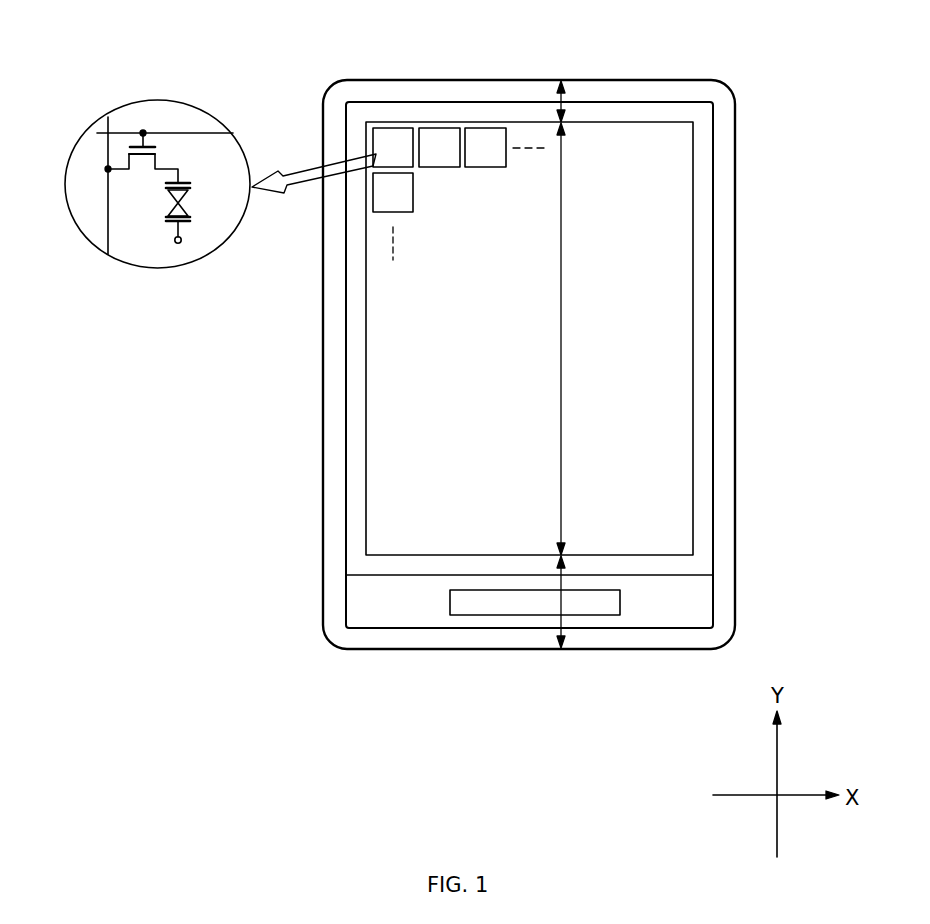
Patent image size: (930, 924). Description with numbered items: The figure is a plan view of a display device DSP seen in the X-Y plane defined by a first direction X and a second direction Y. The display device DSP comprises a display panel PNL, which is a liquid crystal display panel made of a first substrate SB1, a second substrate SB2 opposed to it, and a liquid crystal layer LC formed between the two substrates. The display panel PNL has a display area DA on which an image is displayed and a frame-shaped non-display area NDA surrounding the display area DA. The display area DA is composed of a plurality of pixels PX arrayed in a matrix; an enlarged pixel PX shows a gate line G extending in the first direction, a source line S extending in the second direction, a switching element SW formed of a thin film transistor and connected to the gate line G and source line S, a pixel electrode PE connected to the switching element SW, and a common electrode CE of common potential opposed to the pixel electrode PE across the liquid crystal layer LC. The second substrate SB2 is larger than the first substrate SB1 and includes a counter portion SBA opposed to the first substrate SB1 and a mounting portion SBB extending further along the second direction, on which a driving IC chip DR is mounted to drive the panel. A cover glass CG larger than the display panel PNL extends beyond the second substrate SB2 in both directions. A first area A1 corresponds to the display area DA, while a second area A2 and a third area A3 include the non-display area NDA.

The display device DSP is at (737, 73).
The cover glass CG is at (380, 79).
The display panel PNL is at (720, 98).
The display area DA is at (696, 192).
The non-display area NDA is at (708, 240).
The first substrate SB1 is at (702, 433).
The second substrate SB2 is at (808, 522).
The counter portion SBA is at (712, 536).
The mounting portion SBB is at (712, 603).
The driving IC chip DR is at (493, 615).
The first area A1 is at (575, 339).
The second area A2 is at (563, 100).
The third area A3 is at (560, 605).
The pixel PX is at (138, 98).
The source line S is at (102, 155).
The gate line G is at (190, 133).
The switching element SW is at (143, 172).
The pixel electrode PE is at (183, 183).
The liquid crystal layer LC is at (188, 203).
The common electrode CE is at (183, 227).